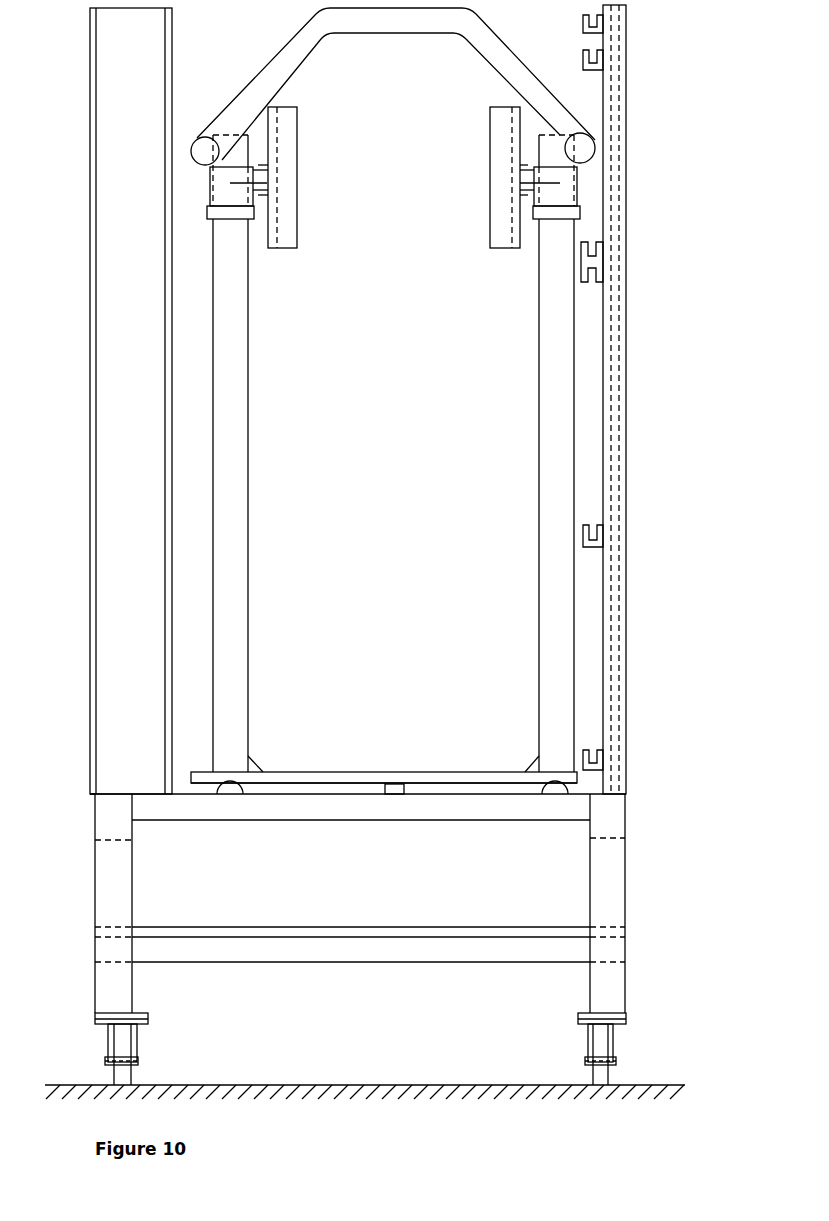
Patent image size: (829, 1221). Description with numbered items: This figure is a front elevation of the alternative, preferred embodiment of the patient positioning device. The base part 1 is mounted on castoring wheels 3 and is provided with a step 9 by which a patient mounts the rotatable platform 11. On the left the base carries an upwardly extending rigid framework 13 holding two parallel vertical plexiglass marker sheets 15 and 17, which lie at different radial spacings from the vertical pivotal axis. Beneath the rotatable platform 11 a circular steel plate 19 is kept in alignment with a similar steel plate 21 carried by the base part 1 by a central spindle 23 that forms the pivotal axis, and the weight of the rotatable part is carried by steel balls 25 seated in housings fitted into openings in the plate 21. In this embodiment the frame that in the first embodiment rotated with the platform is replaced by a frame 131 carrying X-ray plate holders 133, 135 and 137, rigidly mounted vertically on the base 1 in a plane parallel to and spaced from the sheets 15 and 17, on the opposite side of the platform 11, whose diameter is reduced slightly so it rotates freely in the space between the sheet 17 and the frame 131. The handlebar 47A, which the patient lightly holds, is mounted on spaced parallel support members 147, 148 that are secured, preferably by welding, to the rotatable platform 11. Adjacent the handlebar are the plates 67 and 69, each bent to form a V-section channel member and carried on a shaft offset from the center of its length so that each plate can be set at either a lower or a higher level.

The base part 1 is at (95, 917).
The castoring wheels 3 is at (122, 1070).
The step 9 is at (182, 932).
The platform 11 is at (322, 772).
The rigid framework 13 is at (128, 592).
The plexiglass sheet 15 is at (90, 548).
The plexiglass sheet 17 is at (165, 505).
The circular steel plate 19 is at (460, 781).
The steel plate 21 is at (492, 794).
The central spindle 23 is at (395, 794).
The steel balls 25 is at (228, 794).
The handlebar 47A is at (373, 20).
The plate 67 is at (290, 237).
The plate 69 is at (500, 237).
The frame 131 is at (617, 662).
The X-ray plate holder 133 is at (585, 52).
The X-ray plate holder 135 is at (590, 540).
The X-ray plate holder 137 is at (598, 262).
The support member 147 is at (230, 418).
The support member 148 is at (557, 418).